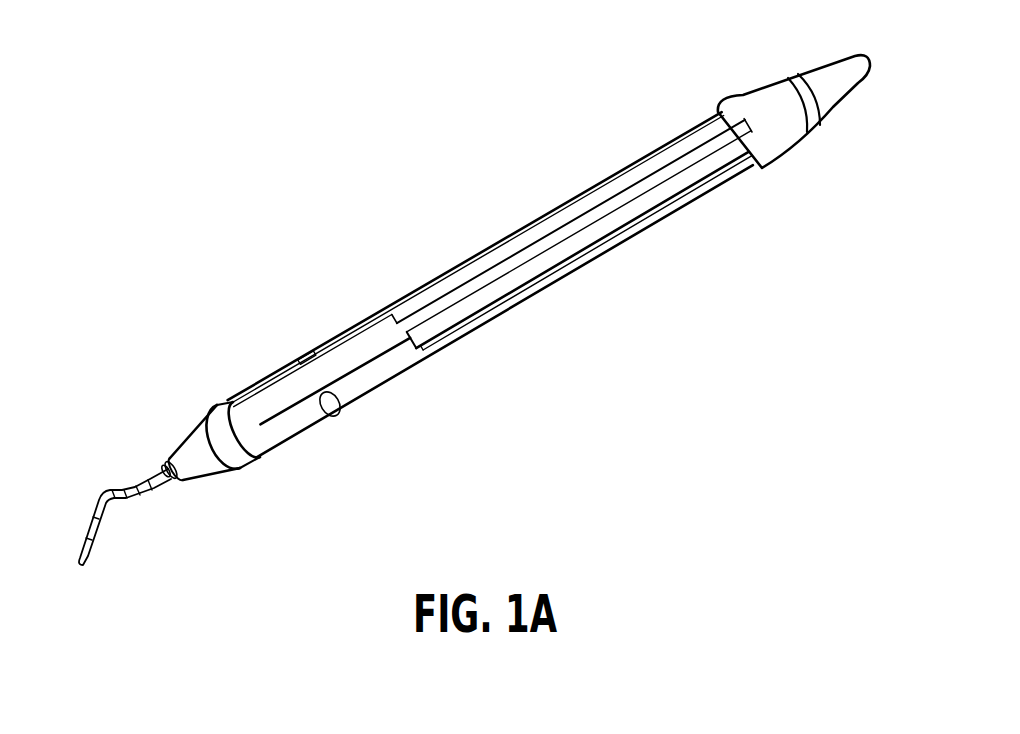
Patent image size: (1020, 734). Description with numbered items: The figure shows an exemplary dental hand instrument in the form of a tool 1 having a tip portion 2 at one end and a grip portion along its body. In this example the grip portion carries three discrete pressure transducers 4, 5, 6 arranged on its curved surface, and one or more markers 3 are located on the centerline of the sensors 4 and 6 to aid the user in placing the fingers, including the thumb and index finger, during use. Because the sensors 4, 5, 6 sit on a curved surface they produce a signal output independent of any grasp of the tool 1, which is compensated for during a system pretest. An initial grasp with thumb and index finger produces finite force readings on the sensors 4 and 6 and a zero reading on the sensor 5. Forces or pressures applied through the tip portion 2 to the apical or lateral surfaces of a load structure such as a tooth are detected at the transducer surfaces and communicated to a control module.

The tool 1 is at (752, 104).
The tip portion 2 is at (84, 538).
The markers 3 is at (305, 353).
The transducer 4 is at (250, 388).
The transducer 5 is at (378, 333).
The transducer 6 is at (399, 369).